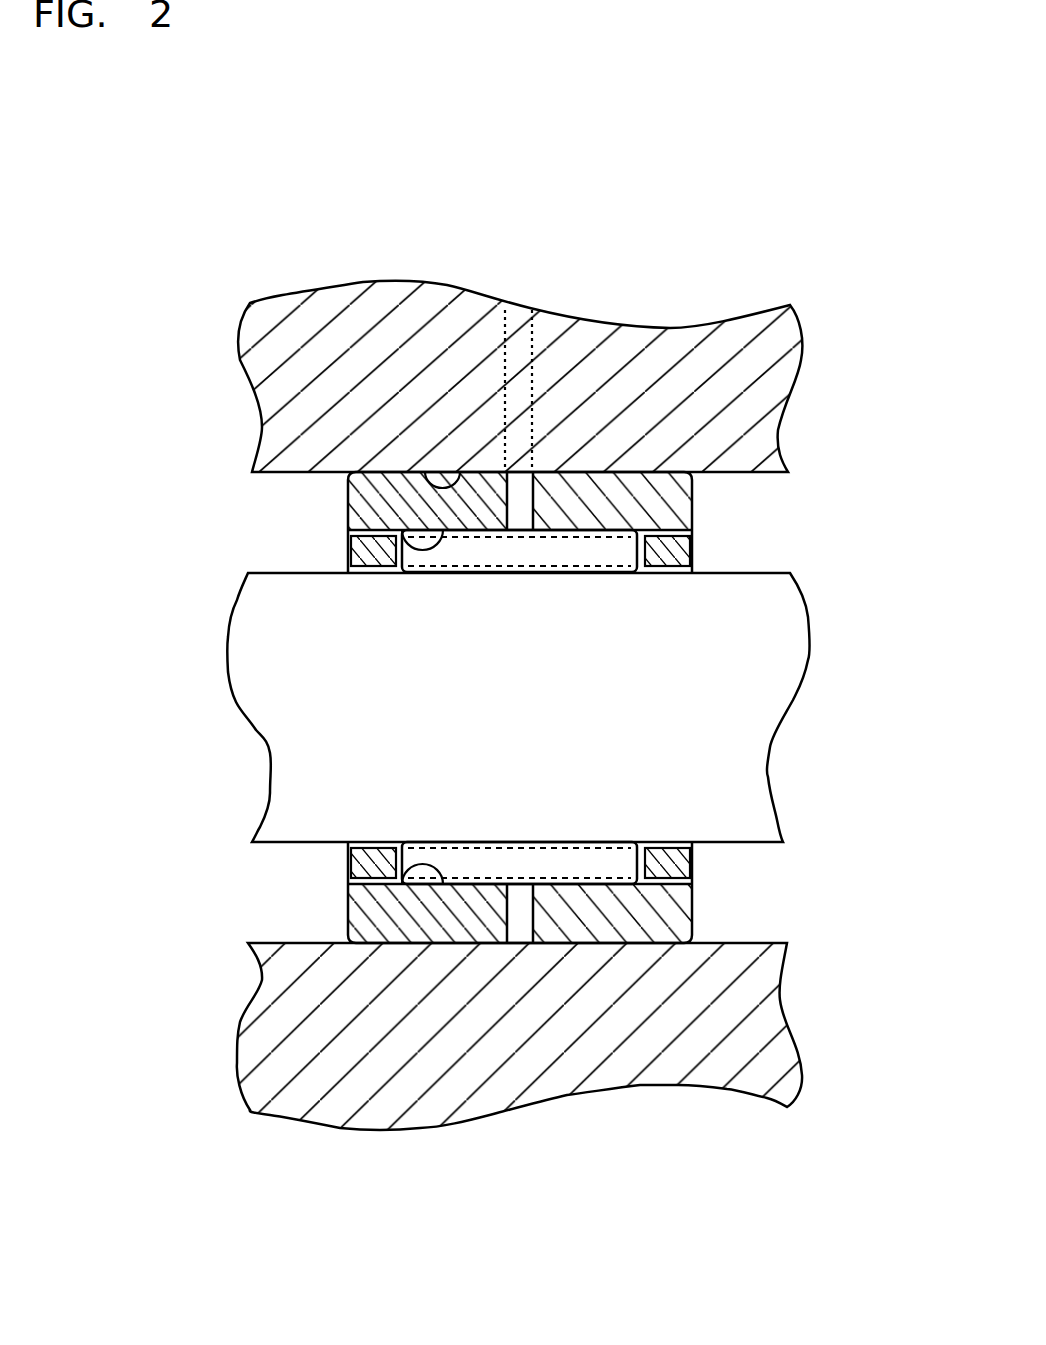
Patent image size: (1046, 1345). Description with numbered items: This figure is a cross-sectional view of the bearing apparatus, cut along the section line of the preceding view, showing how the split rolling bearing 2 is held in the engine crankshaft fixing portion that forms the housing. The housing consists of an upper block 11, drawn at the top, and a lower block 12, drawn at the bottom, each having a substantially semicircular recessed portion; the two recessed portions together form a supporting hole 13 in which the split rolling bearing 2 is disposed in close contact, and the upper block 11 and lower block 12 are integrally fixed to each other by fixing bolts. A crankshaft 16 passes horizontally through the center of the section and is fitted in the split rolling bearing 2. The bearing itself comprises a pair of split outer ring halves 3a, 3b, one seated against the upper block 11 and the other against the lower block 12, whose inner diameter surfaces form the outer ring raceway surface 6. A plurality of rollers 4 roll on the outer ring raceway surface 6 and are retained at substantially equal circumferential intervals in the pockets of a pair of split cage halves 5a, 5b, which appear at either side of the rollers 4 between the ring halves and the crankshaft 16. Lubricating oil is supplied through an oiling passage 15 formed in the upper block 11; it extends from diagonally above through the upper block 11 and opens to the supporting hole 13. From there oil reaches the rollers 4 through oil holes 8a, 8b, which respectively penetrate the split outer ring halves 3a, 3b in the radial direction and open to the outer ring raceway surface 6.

The split rolling bearing 2 is at (312, 491).
The split outer ring half 3a is at (363, 513).
The split outer ring half 3b is at (362, 908).
The roller 4 is at (573, 548).
The split cage half 5a is at (677, 553).
The split cage half 5b is at (677, 865).
The outer ring raceway surface 6 is at (404, 530).
The oil hole 8a is at (522, 492).
The oil hole 8b is at (525, 920).
The upper block 11 is at (667, 352).
The lower block 12 is at (665, 1063).
The supporting hole 13 is at (463, 472).
The oiling passage 15 is at (520, 333).
The crankshaft 16 is at (302, 768).